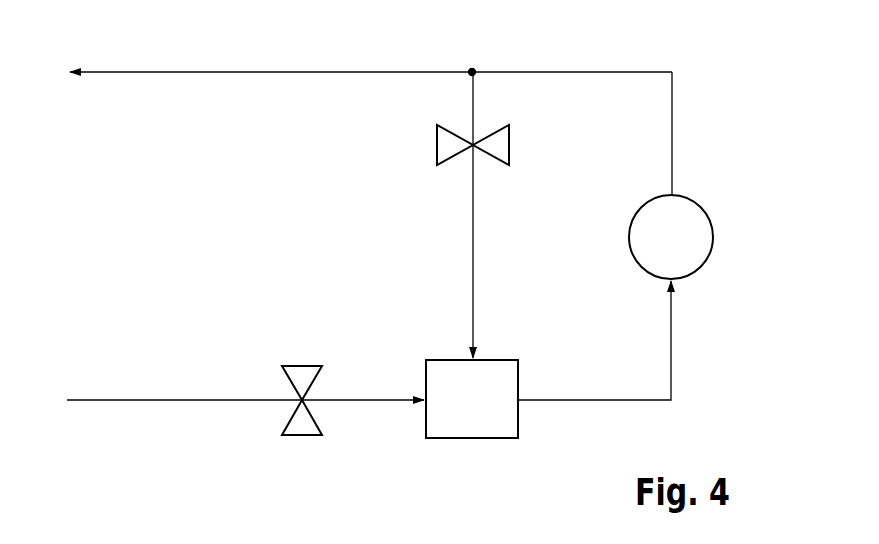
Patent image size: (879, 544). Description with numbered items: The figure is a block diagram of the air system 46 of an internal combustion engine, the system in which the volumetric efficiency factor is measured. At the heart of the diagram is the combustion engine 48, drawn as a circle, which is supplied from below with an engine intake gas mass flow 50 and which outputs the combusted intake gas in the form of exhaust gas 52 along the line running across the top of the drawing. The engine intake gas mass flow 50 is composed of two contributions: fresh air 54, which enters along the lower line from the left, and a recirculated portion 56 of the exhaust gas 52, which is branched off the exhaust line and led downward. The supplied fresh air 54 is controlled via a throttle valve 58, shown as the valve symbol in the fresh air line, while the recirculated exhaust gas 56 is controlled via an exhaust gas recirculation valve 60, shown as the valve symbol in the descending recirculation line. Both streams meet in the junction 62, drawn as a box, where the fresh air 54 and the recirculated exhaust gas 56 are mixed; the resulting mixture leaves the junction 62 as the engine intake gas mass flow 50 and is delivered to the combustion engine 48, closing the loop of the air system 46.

The air system 46 is at (706, 56).
The combustion engine 48 is at (699, 207).
The engine intake gas mass flow 50 is at (671, 356).
The exhaust gas 52 is at (233, 70).
The fresh air 54 is at (361, 398).
The recirculated portion of exhaust gas 56 is at (473, 237).
The throttle valve 58 is at (303, 437).
The exhaust gas recirculation valve 60 is at (509, 145).
The junction 62 is at (469, 440).